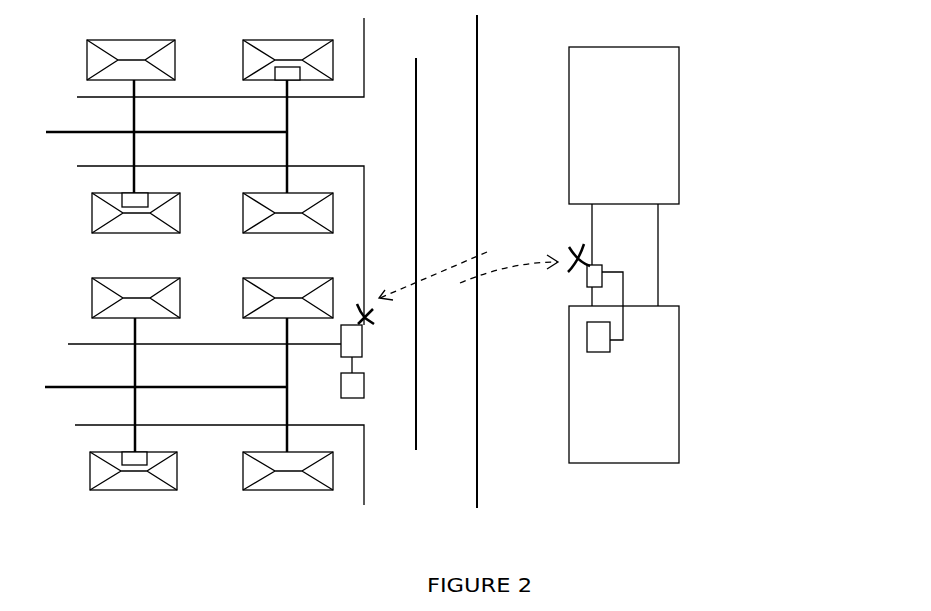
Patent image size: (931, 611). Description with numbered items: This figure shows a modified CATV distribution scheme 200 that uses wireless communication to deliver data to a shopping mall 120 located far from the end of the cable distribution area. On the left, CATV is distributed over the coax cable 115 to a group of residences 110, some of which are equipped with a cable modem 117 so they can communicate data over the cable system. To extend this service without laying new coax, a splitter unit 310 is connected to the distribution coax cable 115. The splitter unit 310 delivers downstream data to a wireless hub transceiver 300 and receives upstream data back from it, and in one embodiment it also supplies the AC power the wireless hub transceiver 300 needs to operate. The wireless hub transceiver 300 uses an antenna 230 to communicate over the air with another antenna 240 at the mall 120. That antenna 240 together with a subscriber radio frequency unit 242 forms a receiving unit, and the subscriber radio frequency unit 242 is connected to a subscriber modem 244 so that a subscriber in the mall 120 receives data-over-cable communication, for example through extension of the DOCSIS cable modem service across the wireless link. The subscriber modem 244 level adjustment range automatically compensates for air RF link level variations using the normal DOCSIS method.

The modified CATV distribution scheme 200 is at (859, 95).
The residences 110 is at (243, 58).
The cable modem 117 is at (296, 78).
The coax cable 115 is at (95, 133).
The antenna 230 is at (378, 322).
The wireless hub transceiver 300 is at (341, 350).
The splitter unit 310 is at (364, 380).
The shopping mall 120 is at (660, 280).
The antenna 240 is at (581, 250).
The subscriber radio frequency unit 242 is at (587, 278).
The subscriber modem 244 is at (596, 352).